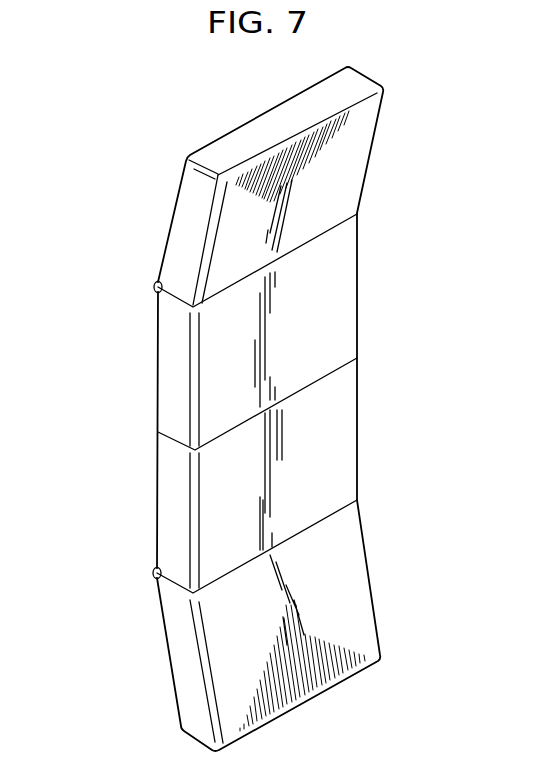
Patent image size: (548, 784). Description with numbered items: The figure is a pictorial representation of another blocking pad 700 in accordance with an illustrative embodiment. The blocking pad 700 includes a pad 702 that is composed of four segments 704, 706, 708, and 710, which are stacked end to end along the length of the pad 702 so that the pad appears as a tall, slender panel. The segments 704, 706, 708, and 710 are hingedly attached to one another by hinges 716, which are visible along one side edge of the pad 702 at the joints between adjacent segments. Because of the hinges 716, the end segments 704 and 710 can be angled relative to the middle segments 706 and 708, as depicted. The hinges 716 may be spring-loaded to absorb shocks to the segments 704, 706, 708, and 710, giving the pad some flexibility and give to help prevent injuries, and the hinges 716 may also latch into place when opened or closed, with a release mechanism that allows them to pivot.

The blocking pad 700 is at (117, 96).
The pad 702 is at (208, 143).
The segment 704 is at (362, 157).
The segment 706 is at (350, 295).
The segment 708 is at (350, 420).
The segment 710 is at (362, 577).
The hinges 716 is at (154, 285).